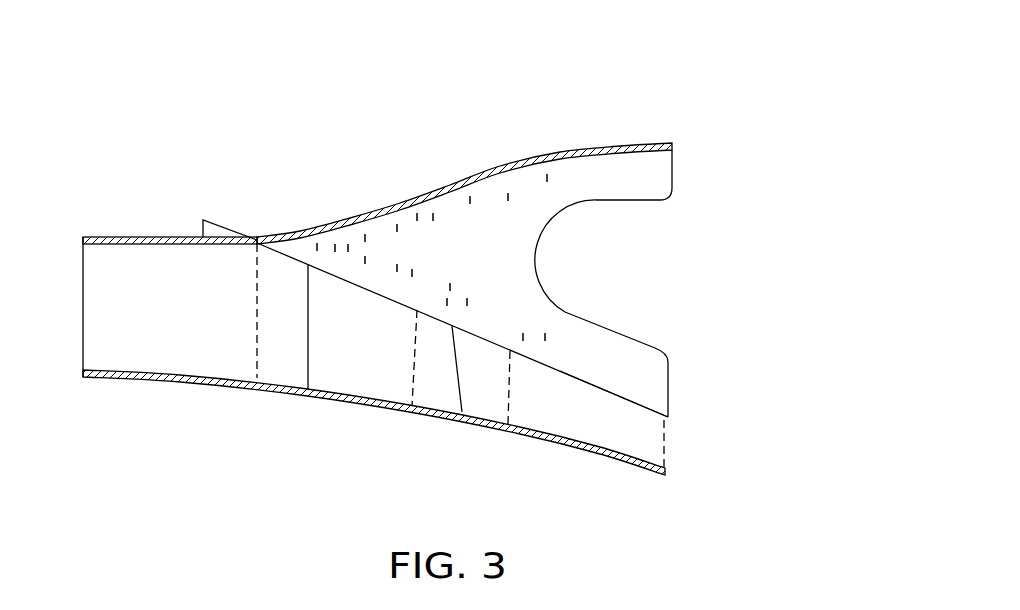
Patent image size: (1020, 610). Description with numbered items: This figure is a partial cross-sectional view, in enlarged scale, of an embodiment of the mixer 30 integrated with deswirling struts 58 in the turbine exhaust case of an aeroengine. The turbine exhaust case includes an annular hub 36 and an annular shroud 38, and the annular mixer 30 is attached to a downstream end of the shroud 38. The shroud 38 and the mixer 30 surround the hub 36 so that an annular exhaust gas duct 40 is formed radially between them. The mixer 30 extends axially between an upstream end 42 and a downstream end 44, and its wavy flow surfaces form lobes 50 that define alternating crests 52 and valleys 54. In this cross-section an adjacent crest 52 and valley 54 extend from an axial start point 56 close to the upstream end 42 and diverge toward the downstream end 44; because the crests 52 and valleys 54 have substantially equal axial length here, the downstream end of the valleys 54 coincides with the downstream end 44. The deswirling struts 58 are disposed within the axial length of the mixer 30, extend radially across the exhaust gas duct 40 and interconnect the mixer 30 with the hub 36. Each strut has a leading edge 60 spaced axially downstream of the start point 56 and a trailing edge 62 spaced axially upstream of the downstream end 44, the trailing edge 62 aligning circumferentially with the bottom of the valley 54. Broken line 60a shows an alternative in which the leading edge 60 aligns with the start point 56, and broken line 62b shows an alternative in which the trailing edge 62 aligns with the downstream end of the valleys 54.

The mixer 30 is at (522, 195).
The annular hub 36 is at (190, 383).
The annular shroud 38 is at (131, 237).
The annular exhaust gas duct 40 is at (490, 393).
The upstream end 42 is at (203, 220).
The downstream end 44 is at (668, 381).
The lobes 50 is at (637, 180).
The crests 52 is at (633, 145).
The valleys 54 is at (590, 387).
The axial start point 56 is at (257, 240).
The deswirling struts 58 is at (342, 368).
The leading edge 60 is at (308, 350).
The broken line 60a is at (255, 348).
The trailing edge 62 is at (457, 370).
The broken line 62b is at (664, 441).